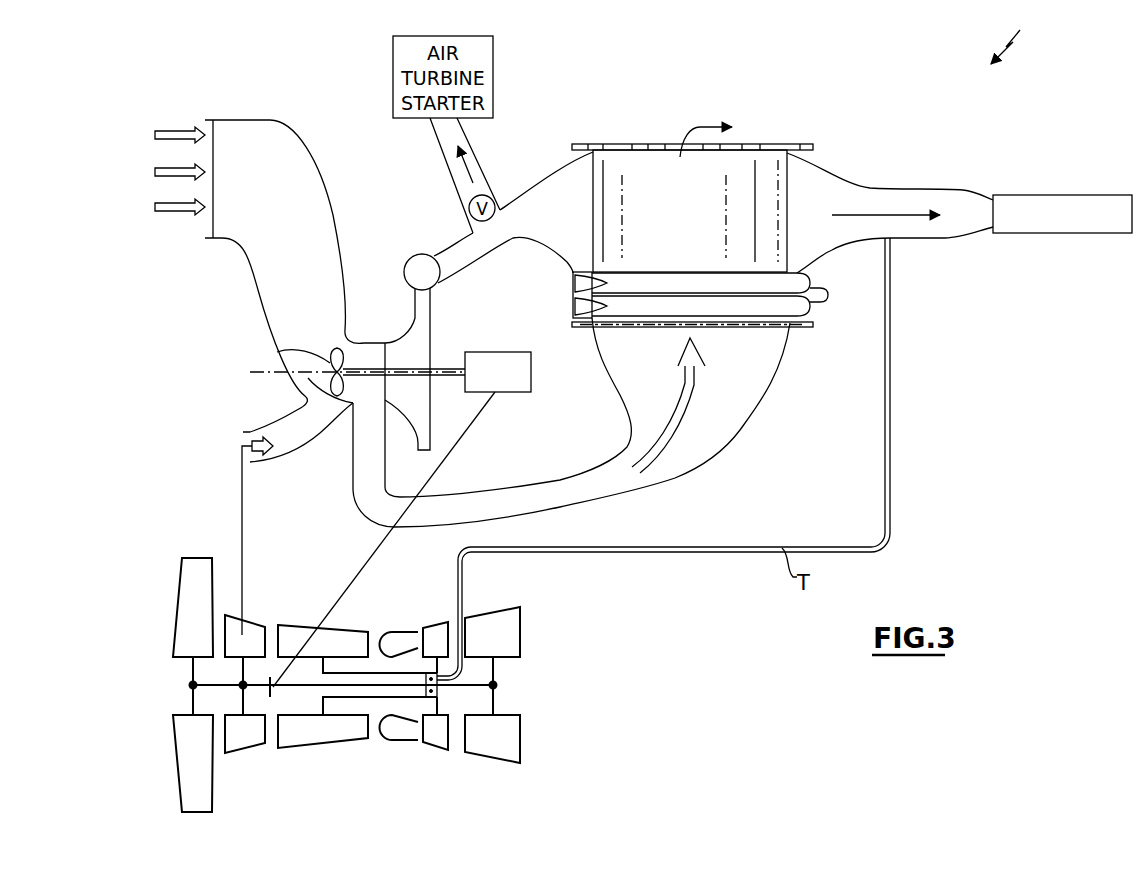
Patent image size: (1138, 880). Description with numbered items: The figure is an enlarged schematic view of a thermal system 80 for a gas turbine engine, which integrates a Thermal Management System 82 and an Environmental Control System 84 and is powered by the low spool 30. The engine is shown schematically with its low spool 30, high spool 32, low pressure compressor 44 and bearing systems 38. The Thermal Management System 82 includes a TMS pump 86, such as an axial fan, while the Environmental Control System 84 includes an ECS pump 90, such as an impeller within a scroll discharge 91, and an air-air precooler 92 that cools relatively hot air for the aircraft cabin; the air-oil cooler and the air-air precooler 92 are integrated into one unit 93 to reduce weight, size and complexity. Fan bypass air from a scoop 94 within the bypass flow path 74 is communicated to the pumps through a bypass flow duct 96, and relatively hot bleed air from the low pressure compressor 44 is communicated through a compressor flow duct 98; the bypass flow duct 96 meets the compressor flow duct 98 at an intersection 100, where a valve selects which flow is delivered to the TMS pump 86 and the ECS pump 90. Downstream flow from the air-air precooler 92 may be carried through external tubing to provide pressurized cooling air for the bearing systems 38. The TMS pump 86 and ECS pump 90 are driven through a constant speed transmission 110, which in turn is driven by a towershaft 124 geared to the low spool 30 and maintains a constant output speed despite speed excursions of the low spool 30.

The low spool 30 is at (359, 685).
The high spool 32 is at (345, 697).
The bearing systems 38 is at (430, 702).
The low pressure compressor 44 is at (243, 738).
The bypass flow path 74 is at (141, 185).
The thermal system 80 is at (1019, 40).
The Thermal Management System 82 is at (698, 194).
The Environmental Control System 84 is at (960, 265).
The TMS pump 86 is at (366, 341).
The ECS pump 90 is at (418, 351).
The scroll discharge 91 is at (418, 258).
The air-air precooler 92 is at (702, 257).
The integrated cooler unit 93 is at (808, 132).
The scoop 94 is at (272, 124).
The bypass flow duct 96 is at (293, 262).
The compressor flow duct 98 is at (287, 460).
The intersection 100 is at (277, 352).
The constant speed transmission 110 is at (518, 385).
The towershaft 124 is at (354, 580).